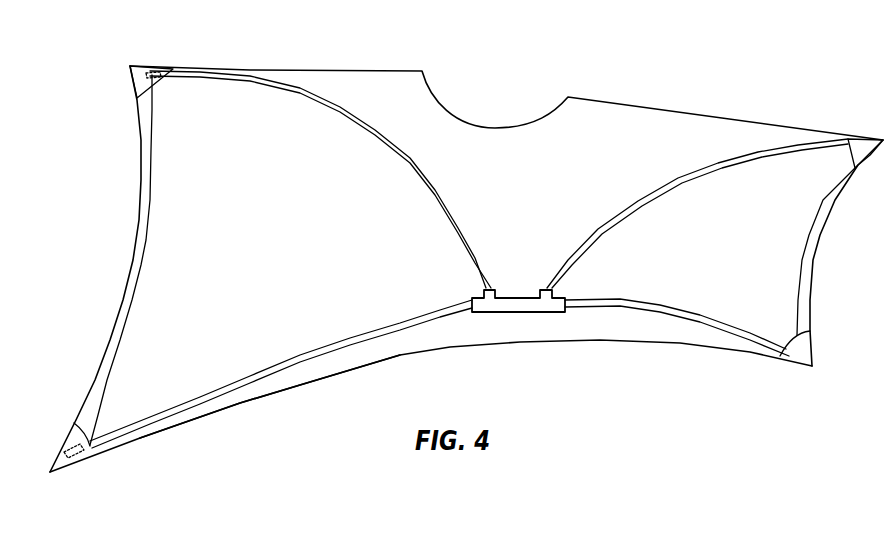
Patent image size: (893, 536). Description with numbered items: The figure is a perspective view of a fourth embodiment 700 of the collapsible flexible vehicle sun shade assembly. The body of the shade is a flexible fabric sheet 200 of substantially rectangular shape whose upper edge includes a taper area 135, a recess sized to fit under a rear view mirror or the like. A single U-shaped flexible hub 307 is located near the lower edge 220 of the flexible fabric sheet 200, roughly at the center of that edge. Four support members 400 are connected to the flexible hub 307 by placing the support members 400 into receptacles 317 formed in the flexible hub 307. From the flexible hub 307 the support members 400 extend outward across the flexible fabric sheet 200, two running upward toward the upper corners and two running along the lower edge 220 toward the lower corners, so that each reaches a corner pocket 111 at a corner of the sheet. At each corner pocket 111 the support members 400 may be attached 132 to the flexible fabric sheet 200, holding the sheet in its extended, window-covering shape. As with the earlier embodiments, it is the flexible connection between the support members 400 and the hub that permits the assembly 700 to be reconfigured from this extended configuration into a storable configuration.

The fourth embodiment of the collapsible flexible sun shade assembly 700 is at (461, 262).
The corner pocket 111 is at (140, 68).
The taper area 135 is at (452, 113).
The flexible fabric sheet 200 is at (258, 232).
The support members 400 is at (458, 239).
The U-shaped flexible hub 307 is at (520, 298).
The receptacles 317 is at (553, 292).
The lower edge 220 is at (280, 385).
The attachment 132 is at (78, 462).